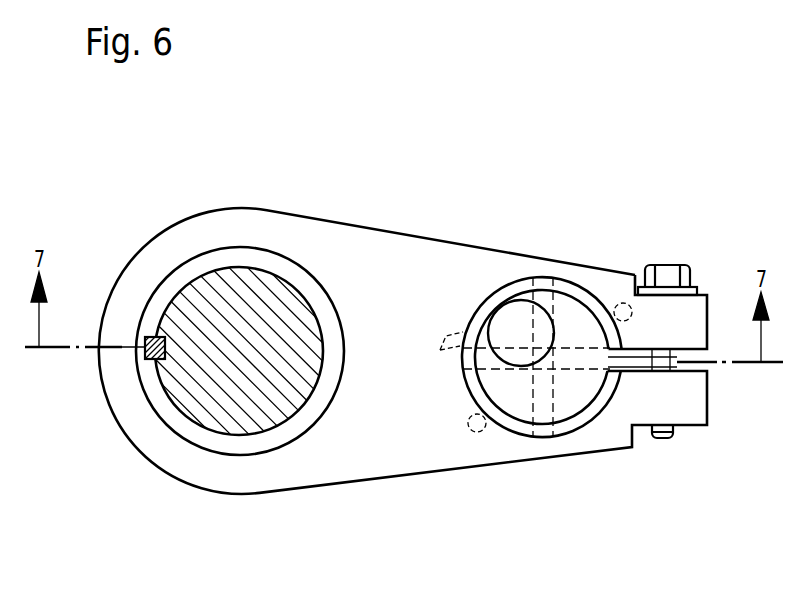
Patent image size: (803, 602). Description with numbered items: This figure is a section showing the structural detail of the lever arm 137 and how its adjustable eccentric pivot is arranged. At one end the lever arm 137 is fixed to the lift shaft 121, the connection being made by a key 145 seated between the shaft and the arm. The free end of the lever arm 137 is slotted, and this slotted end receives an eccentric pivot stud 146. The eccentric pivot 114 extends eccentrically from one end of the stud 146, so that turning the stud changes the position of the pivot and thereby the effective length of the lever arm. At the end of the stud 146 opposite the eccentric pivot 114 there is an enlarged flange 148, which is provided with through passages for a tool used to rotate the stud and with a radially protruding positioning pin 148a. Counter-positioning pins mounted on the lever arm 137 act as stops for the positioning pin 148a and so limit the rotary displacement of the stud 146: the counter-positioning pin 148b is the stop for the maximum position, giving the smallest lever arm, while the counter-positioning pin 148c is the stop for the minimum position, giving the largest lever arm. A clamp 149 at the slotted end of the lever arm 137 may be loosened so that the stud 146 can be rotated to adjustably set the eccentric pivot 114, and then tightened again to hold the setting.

The eccentric pivot 114 is at (522, 315).
The lift shaft 121 is at (246, 287).
The lever arm 137 is at (337, 243).
The key 145 is at (152, 336).
The eccentric pivot stud 146 is at (577, 397).
The enlarged flange 148 is at (477, 303).
The positioning pin 148a is at (445, 337).
The counter-positioning pin 148b is at (477, 432).
The counter-positioning pin 148c is at (617, 305).
The clamp 149 is at (668, 265).